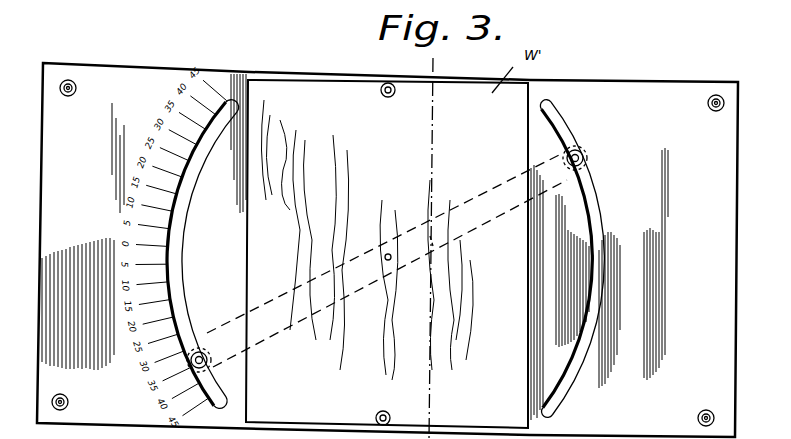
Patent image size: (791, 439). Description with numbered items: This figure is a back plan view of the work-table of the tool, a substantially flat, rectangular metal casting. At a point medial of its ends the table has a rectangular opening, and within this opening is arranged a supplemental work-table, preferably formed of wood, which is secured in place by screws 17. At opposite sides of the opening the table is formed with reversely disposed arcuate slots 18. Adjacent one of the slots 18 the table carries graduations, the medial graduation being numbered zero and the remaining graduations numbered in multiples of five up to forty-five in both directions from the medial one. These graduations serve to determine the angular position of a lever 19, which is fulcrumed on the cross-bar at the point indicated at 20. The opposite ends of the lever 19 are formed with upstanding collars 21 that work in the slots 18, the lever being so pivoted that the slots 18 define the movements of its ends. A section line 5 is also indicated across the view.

The section line 5 is at (452, 60).
The screws 17 is at (387, 98).
The arcuate slots 18 is at (231, 97).
The lever 19 is at (433, 244).
The point 20 is at (390, 251).
The upstanding collars 21 is at (201, 348).